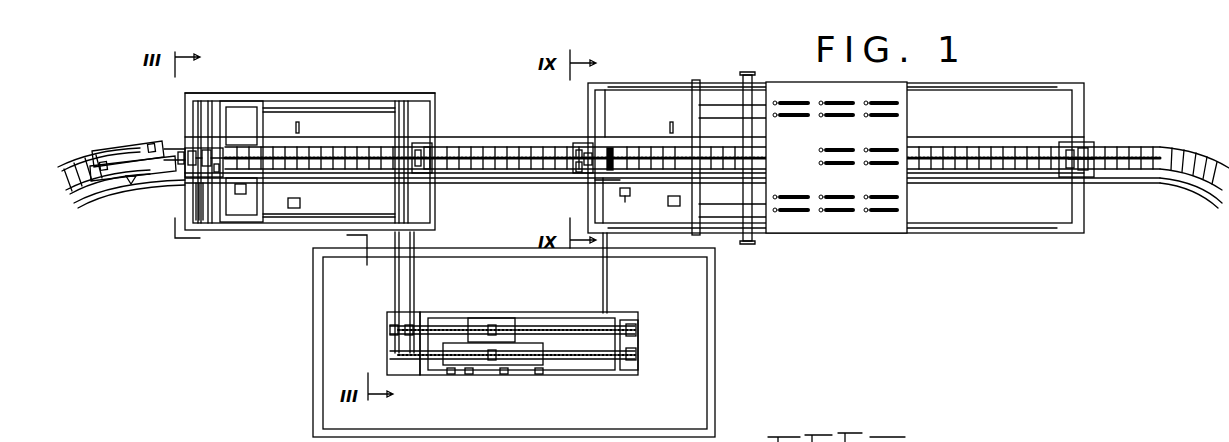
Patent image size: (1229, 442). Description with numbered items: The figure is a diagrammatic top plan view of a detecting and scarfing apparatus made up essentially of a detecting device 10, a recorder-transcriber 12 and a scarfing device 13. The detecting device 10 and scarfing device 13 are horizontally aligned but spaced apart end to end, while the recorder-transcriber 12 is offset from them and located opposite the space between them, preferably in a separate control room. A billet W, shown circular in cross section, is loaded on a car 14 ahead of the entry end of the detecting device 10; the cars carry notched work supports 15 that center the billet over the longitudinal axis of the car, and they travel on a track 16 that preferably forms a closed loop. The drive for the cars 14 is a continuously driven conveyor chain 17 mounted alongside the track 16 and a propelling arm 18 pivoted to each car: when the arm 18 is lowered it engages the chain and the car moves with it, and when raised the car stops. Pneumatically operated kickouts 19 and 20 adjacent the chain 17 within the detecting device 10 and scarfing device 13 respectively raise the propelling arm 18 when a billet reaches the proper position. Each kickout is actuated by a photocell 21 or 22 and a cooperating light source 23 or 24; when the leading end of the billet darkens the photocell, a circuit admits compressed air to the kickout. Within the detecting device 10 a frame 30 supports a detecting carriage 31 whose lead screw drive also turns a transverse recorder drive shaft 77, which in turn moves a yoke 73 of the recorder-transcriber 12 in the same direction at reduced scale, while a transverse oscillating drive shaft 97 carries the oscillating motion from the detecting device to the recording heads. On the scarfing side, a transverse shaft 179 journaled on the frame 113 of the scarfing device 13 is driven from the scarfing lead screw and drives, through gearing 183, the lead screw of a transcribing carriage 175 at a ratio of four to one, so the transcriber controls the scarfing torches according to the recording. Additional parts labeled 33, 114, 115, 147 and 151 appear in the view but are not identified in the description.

The detecting device 10 is at (386, 85).
The recorder-transcriber 12 is at (596, 381).
The scarfing device 13 is at (711, 78).
The car 14 is at (146, 148).
The notched work supports 15 is at (106, 180).
The track 16 is at (80, 160).
The conveyor chain 17 is at (90, 202).
The propelling arm 18 is at (134, 185).
The kickout 19 is at (240, 194).
The kickout 20 is at (629, 206).
The photocell 21 is at (300, 203).
The photocell 22 is at (668, 201).
The light source 23 is at (300, 127).
The light source 24 is at (670, 126).
The frame 30 is at (314, 91).
The carriage 31 is at (233, 107).
The guide rails 33 is at (344, 106).
The yoke 73 is at (515, 367).
The transverse recorder drive shaft 77 is at (414, 292).
The transverse oscillating drive shaft 97 is at (395, 282).
The frame 113 is at (590, 115).
The side rails 114 is at (1002, 88).
The upright post 115 is at (694, 88).
The cover plate 147 is at (803, 168).
The plug pins 151 is at (880, 212).
The transcribing carriage 175 is at (506, 318).
The transverse shaft 179 is at (607, 281).
The gearing 183 is at (1068, 436).
The billet W is at (118, 160).